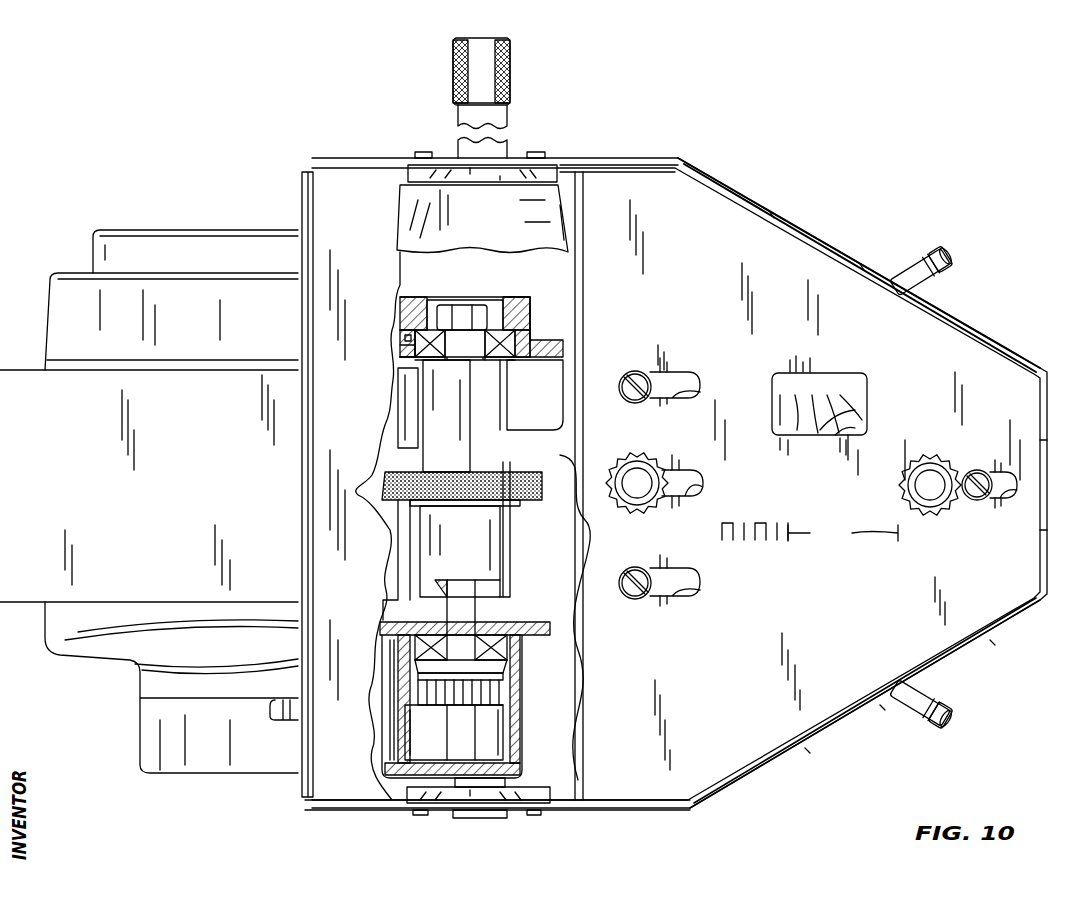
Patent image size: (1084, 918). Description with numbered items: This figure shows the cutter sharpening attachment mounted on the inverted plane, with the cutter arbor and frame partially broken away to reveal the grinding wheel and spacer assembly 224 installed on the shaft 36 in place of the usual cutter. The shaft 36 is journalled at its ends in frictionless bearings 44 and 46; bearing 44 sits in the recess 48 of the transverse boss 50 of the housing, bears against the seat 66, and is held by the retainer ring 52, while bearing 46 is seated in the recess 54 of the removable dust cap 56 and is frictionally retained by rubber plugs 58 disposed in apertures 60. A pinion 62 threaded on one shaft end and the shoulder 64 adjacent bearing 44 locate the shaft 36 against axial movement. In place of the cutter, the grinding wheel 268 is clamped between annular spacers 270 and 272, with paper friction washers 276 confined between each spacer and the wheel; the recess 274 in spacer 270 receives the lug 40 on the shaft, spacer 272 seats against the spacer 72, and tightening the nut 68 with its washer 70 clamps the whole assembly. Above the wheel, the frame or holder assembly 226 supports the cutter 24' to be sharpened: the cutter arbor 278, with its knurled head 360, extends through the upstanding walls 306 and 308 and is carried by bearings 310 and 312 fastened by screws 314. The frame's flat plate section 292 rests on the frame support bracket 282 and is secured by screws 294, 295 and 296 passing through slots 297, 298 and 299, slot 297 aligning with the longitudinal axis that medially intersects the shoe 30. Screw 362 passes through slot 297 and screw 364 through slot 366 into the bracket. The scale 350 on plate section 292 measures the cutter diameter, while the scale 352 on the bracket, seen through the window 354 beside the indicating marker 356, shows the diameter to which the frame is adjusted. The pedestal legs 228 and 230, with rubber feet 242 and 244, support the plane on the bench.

The cutter 24' is at (460, 185).
The shoe 30 is at (176, 489).
The shaft 36 is at (495, 300).
The lugs 40 is at (505, 597).
The bearing 44 is at (548, 640).
The bearing 46 is at (530, 338).
The recess 48 is at (438, 622).
The boss 50 is at (505, 688).
The retainer ring 52 is at (480, 690).
The recess 54 is at (563, 347).
The dust cap 56 is at (520, 298).
The rubber plugs 58 is at (400, 340).
The apertures 60 is at (400, 350).
The pinion 62 is at (507, 677).
The shoulder 64 is at (445, 690).
The seat 66 is at (506, 622).
The nut 68 is at (480, 305).
The washer 70 is at (458, 305).
The spacer 72 is at (468, 362).
The grinding wheel and spacer assembly 224 is at (520, 395).
The frame or holder assembly 226 is at (798, 205).
The support leg 228 is at (903, 712).
The support leg 230 is at (905, 266).
The foot 242 is at (950, 705).
The foot 244 is at (938, 256).
The grinding wheel 268 is at (383, 490).
The spacer 270 is at (509, 540).
The spacer 272 is at (418, 403).
The recess 274 is at (455, 580).
The paper friction washers 276 is at (438, 475).
The cutter arbor 278 is at (508, 120).
The frame support bracket 282 is at (777, 772).
The plate section 292 is at (869, 614).
The screw 294 is at (982, 470).
The screw 295 is at (641, 598).
The screw 296 is at (640, 401).
The slot 297 is at (1006, 499).
The slot 298 is at (690, 594).
The slot 299 is at (680, 395).
The upstanding wall 306 is at (386, 160).
The upstanding wall 308 is at (410, 811).
The bearing 310 is at (576, 168).
The bearing 312 is at (552, 795).
The screws 314 is at (430, 153).
The scale 350 is at (808, 527).
The scale 352 is at (845, 415).
The window 354 is at (856, 434).
The indicating marker 356 is at (858, 418).
The knurled head 360 is at (512, 70).
The screw 362 is at (900, 485).
The screw 364 is at (641, 512).
The slot 366 is at (690, 480).